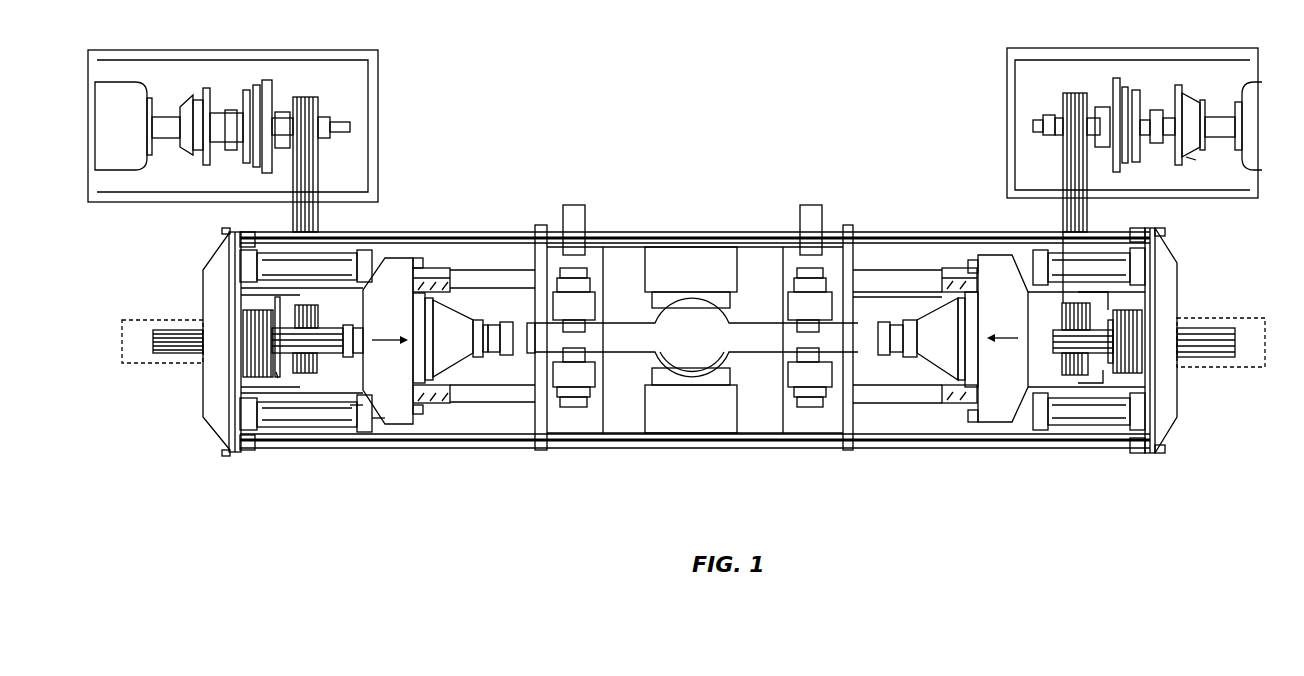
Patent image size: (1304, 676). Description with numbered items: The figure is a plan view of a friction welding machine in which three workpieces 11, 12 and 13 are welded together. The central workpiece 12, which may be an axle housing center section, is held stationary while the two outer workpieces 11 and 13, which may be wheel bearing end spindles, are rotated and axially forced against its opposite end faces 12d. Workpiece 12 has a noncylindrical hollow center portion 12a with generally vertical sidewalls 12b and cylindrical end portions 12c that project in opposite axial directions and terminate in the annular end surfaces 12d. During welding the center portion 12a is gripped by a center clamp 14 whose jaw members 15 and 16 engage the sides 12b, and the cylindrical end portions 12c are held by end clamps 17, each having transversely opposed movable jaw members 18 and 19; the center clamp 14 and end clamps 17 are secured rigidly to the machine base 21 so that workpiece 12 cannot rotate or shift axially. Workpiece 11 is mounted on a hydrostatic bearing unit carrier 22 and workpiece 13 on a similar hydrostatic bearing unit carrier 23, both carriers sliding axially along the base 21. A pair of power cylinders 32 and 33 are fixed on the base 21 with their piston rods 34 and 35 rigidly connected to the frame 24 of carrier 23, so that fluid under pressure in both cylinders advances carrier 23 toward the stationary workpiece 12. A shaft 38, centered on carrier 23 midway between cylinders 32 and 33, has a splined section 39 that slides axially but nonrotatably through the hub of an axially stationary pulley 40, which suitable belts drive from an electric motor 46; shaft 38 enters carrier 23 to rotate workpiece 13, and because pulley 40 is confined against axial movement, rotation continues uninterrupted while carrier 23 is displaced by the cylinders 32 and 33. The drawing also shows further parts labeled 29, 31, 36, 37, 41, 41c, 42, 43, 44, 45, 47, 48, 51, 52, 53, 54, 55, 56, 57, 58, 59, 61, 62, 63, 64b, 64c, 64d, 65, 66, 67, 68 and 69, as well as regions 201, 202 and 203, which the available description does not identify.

The workpiece 11 is at (497, 330).
The central workpiece 12 is at (700, 344).
The center portion 12a is at (662, 350).
The sidewalls 12b is at (734, 325).
The end portions 12c is at (626, 332).
The end faces 12d is at (696, 380).
The workpiece 13 is at (893, 326).
The center clamp 14 is at (656, 262).
The jaw member 15 is at (728, 304).
The jaw member 16 is at (728, 376).
The end clamps 17 is at (568, 380).
The jaw member 18 is at (580, 318).
The jaw member 19 is at (580, 360).
The machine base 21 is at (738, 240).
The hydrostatic bearing unit carrier 22 is at (407, 284).
The hydrostatic bearing unit carrier 23 is at (995, 268).
The frame 24 is at (990, 424).
The right upper tube 29 is at (928, 282).
The right lower tube 31 is at (908, 400).
The power cylinder 32 is at (1140, 268).
The power cylinder 33 is at (1096, 430).
The piston rod 34 is at (1020, 258).
The piston rod 35 is at (1022, 428).
The nut 36 is at (968, 262).
The right cone 37 is at (940, 346).
The shaft 38 is at (1062, 364).
The splined section 39 is at (1064, 316).
The pulley 40 is at (1104, 312).
The right large gear 41 is at (1142, 360).
The gear hub 41c is at (1094, 372).
The right belt 42 is at (1086, 232).
The right belt pulley 43 is at (1090, 96).
The right inset shaft end 44 is at (1036, 122).
The right inset pulley 45 is at (1190, 88).
The electric motor 46 is at (1250, 120).
The pulley flange 47 is at (1190, 156).
The right inset disk set 48 is at (1118, 96).
The left housing lower flange 51 is at (398, 424).
The left upper tube 52 is at (514, 278).
The left lower tube 53 is at (470, 400).
The left upper cylinder 54 is at (325, 258).
The left lower cylinder 55 is at (300, 424).
The left gear housing block 56 is at (368, 262).
The left lower support 57 is at (360, 428).
The left splined shaft 58 is at (318, 334).
The left lower gear 59 is at (316, 356).
The gear hub 61 is at (278, 372).
The left cone 62 is at (452, 338).
The left large gear 63 is at (243, 372).
The left upper gear 64b is at (297, 312).
The left belt lower run 64c is at (300, 303).
The left belt 64d is at (318, 100).
The left inset shaft end 65 is at (336, 122).
The left inset drive unit 66 is at (283, 86).
The left inset motor 67 is at (117, 96).
The left inset pulley 68 is at (206, 96).
The left inset disk set 69 is at (253, 88).
The left section 201 is at (462, 418).
The center section 202 is at (640, 418).
The right section 203 is at (898, 418).